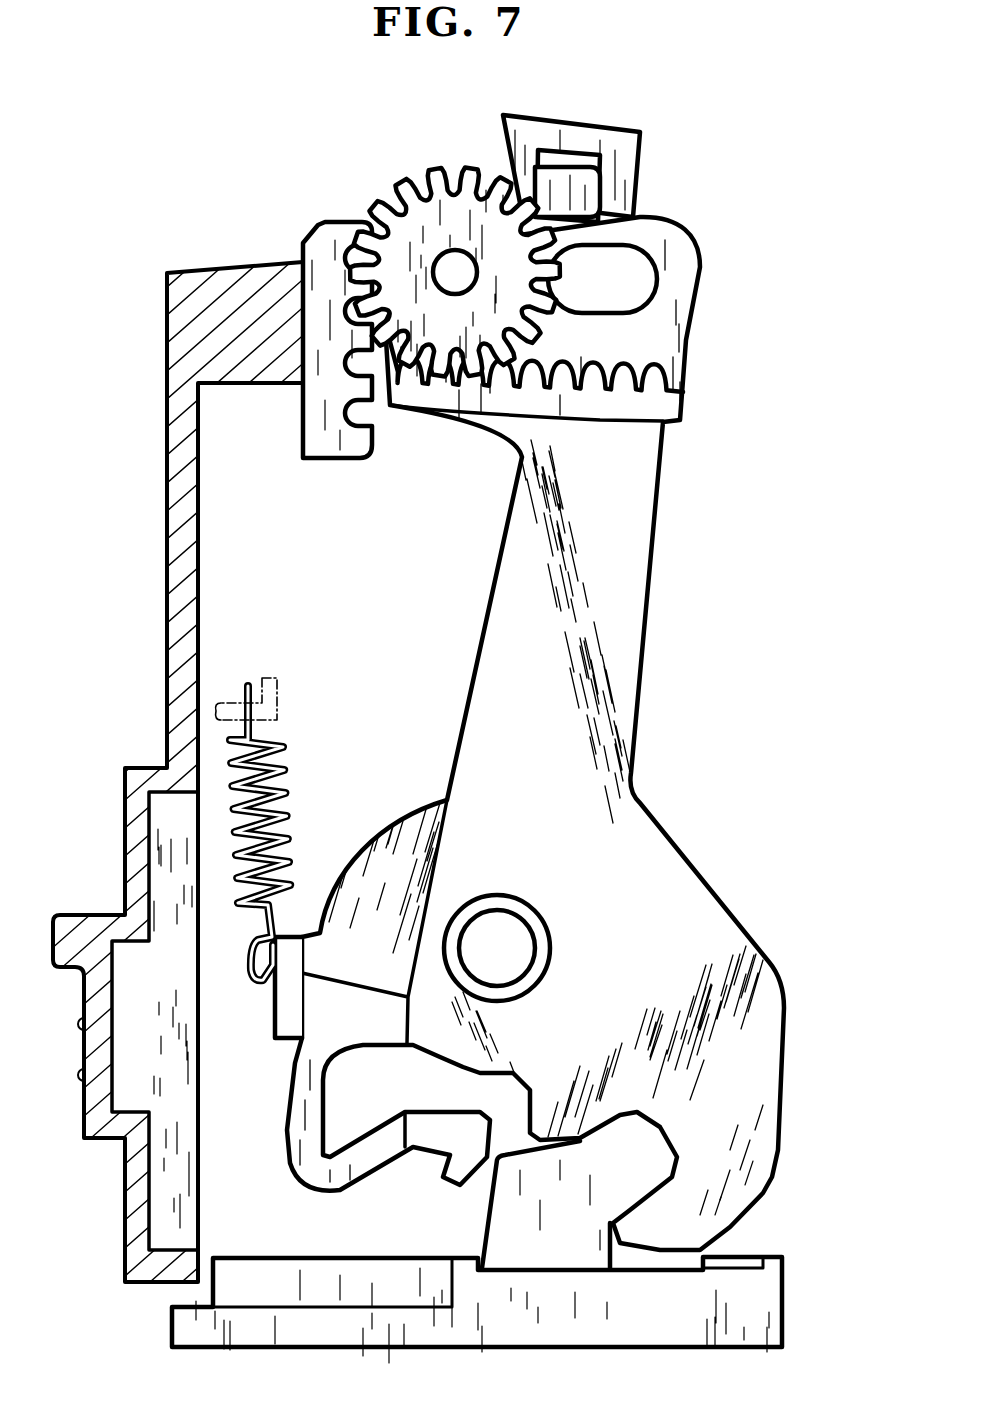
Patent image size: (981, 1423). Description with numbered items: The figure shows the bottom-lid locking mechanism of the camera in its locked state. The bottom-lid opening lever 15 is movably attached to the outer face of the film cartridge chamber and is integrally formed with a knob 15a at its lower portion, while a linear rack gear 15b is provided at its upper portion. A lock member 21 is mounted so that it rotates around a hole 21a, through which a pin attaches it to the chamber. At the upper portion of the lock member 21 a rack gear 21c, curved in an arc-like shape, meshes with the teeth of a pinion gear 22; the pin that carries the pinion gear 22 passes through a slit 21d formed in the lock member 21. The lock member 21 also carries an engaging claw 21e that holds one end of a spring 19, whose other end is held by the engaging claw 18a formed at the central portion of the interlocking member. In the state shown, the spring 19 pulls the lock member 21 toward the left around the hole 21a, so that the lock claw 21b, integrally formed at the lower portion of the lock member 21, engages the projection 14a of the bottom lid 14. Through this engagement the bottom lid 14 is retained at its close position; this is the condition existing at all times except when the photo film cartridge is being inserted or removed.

The bottom lid 14 is at (250, 1245).
The projection 14a is at (590, 1232).
The bottom-lid opening lever 15 is at (212, 583).
The knob 15a is at (115, 1056).
The rack gear 15b is at (330, 460).
The engaging claw 18a is at (279, 703).
The spring 19 is at (283, 808).
The lock member 21 is at (578, 675).
The hole 21a is at (530, 940).
The lock claw 21b is at (708, 1225).
The rack gear 21c is at (630, 382).
The slit 21d is at (638, 274).
The engaging claw 21e is at (252, 960).
The pinion gear 22 is at (432, 168).